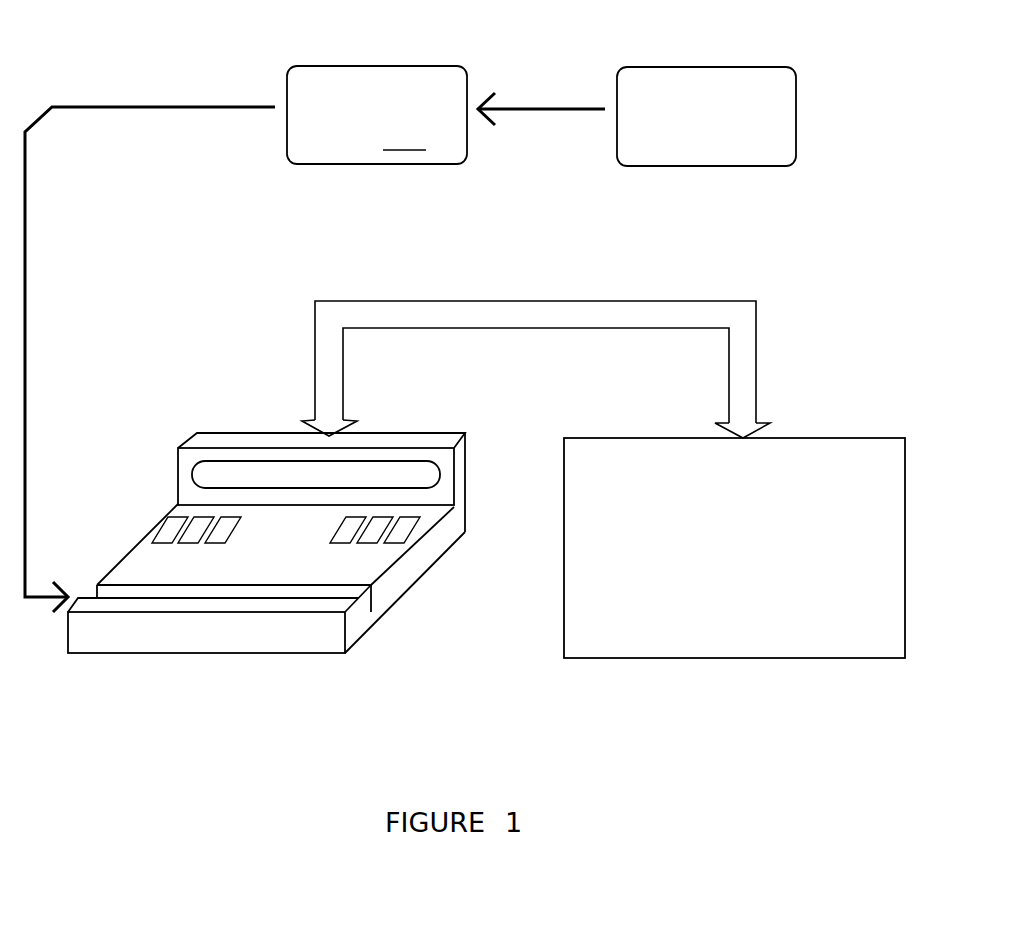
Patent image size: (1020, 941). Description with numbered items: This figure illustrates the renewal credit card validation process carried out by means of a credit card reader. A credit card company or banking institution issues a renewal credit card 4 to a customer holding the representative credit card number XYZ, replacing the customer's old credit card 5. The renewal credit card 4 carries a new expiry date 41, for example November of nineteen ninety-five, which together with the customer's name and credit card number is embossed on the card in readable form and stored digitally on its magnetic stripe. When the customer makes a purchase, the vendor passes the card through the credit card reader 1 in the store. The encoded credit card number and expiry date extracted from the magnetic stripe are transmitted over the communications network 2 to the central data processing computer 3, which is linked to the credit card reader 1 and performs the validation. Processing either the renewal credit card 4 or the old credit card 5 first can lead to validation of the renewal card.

The credit card reader 1 is at (137, 570).
The communications network 2 is at (660, 315).
The central data processing computer 3 is at (770, 450).
The renewal credit card 4 is at (367, 82).
The new expiry date 41 is at (398, 152).
The old credit card 5 is at (700, 82).